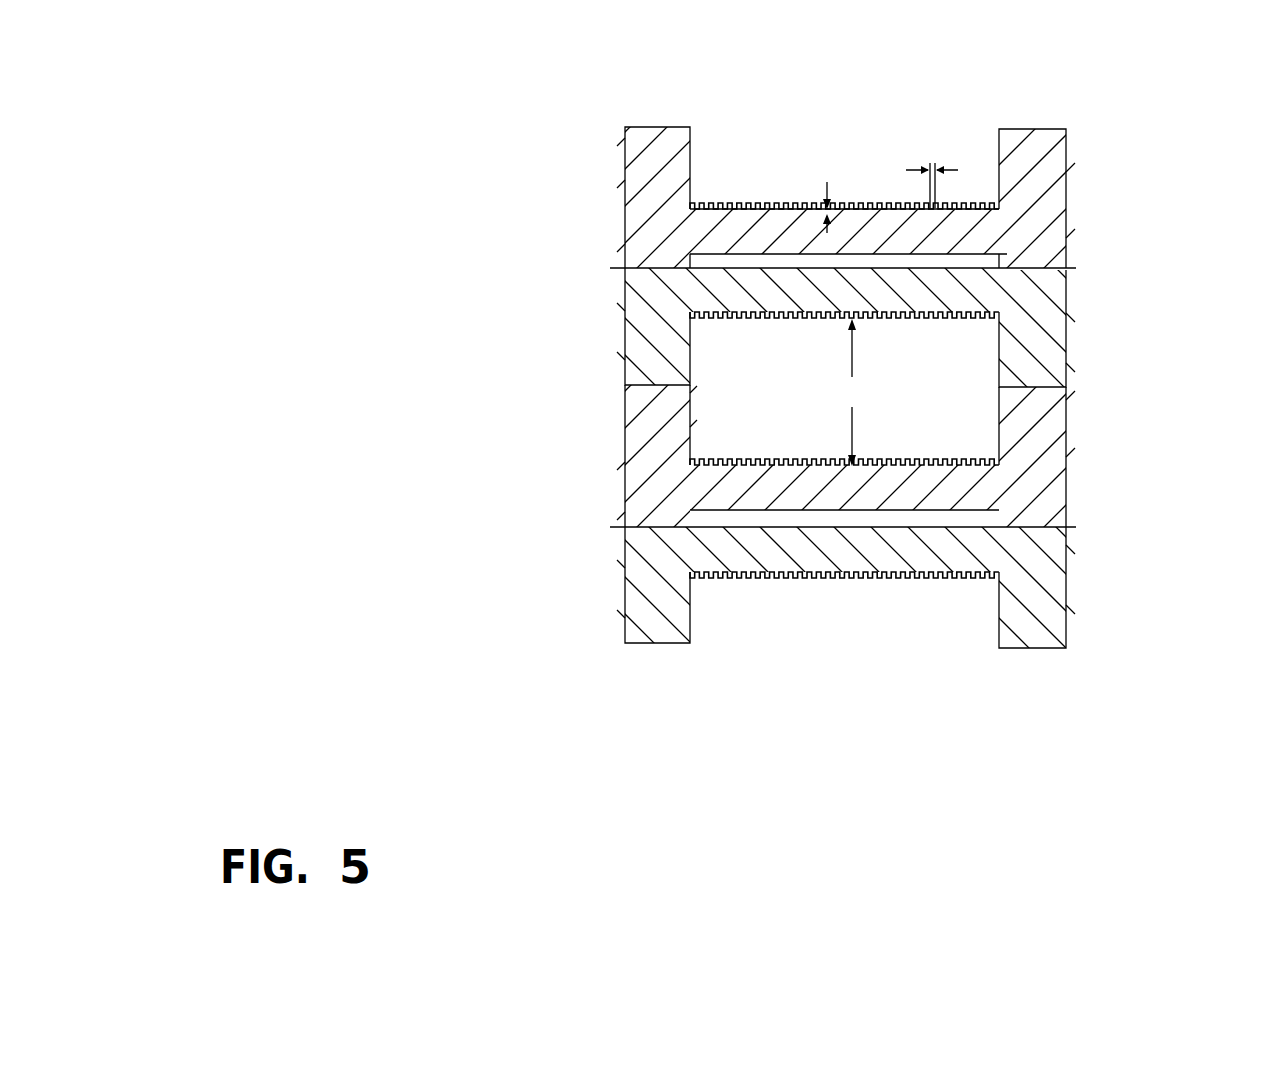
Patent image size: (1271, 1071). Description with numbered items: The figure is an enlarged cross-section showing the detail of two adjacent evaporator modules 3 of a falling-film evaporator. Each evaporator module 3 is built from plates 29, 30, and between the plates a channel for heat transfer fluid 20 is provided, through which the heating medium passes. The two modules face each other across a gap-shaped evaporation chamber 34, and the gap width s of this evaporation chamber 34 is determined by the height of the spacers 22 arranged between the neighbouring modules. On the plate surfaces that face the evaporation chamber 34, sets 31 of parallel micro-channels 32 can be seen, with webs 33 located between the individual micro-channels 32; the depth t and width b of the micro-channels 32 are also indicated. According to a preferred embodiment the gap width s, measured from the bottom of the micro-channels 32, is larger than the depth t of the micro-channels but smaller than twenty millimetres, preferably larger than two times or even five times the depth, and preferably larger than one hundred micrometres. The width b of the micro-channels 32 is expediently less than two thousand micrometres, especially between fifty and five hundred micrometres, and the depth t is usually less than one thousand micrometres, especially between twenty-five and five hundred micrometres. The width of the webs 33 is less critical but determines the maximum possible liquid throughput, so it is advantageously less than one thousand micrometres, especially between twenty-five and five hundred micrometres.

The evaporator module 3 is at (594, 392).
The channel for heat transfer fluid 20 is at (730, 262).
The spacer 22 is at (1044, 347).
The plates of a module 29 is at (1038, 217).
The plates of a module 30 is at (1043, 297).
The set of micro-channels 31 is at (695, 582).
The micro-channel 32 is at (722, 208).
The web between micro-channels 33 is at (756, 208).
The evaporation chamber 34 is at (968, 440).